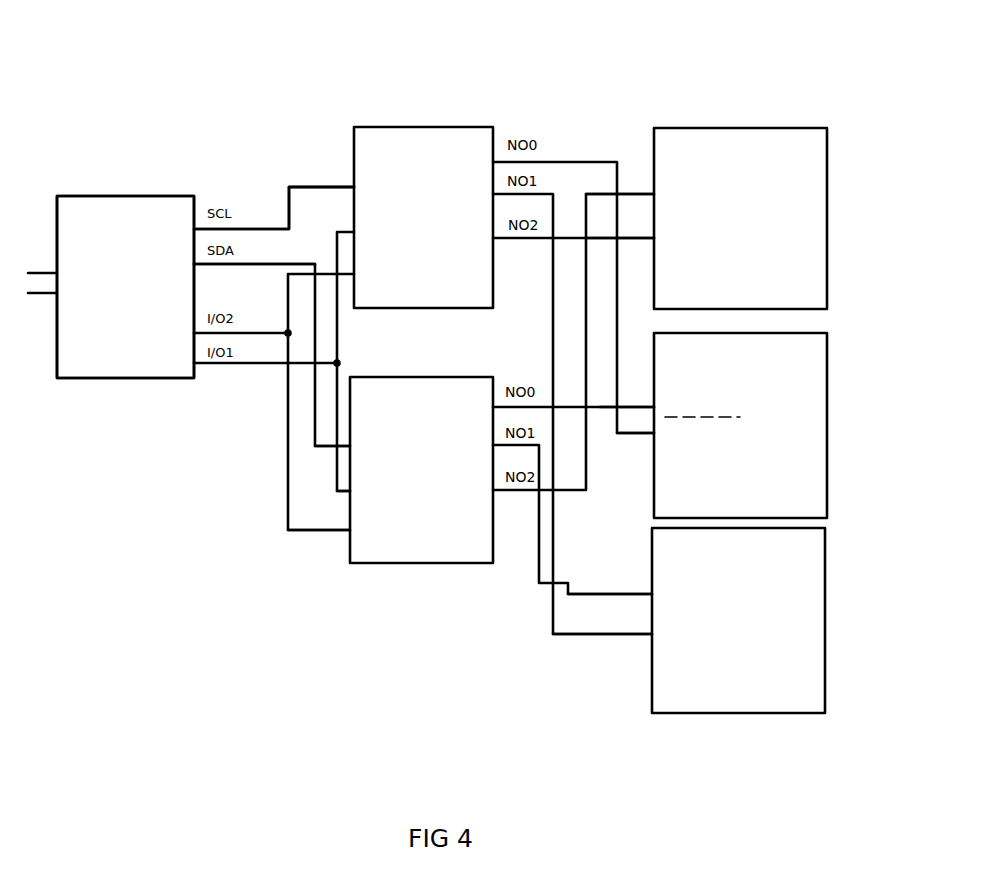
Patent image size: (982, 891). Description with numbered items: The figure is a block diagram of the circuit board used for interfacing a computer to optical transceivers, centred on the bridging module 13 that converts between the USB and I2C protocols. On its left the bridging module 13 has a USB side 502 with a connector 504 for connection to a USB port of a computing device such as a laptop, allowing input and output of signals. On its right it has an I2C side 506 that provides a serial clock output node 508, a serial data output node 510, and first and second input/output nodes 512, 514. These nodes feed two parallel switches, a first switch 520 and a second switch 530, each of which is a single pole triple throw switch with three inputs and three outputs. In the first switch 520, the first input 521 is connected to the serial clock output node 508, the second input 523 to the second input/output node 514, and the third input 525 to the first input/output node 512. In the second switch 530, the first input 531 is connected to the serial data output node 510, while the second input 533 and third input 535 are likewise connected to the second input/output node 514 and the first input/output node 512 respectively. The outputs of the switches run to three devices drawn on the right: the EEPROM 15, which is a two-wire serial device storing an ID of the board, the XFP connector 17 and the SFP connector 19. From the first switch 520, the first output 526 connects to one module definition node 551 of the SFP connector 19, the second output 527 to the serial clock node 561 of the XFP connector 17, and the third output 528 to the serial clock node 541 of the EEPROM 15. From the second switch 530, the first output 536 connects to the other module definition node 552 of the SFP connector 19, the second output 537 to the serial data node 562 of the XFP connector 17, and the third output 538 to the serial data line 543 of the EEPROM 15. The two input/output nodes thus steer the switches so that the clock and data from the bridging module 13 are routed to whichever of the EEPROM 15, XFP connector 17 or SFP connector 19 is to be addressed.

The bridging module 13 is at (120, 373).
The EEPROM 15 is at (720, 143).
The XFP connector 17 is at (692, 700).
The SFP connector 19 is at (781, 428).
The USB side 502 is at (54, 208).
The connector 504 is at (69, 288).
The I2C side 506 is at (198, 212).
The serial clock output node 508 is at (246, 214).
The serial data output node 510 is at (244, 346).
The first input/output node 512 is at (217, 333).
The second input/output node 514 is at (241, 363).
The first switch 520 is at (411, 142).
The first input of first switch 521 is at (344, 179).
The second input of first switch 523 is at (370, 356).
The third input of first switch 525 is at (344, 395).
The first output of first switch 526 is at (550, 290).
The second output of first switch 527 is at (550, 410).
The third output of first switch 528 is at (553, 242).
The second switch 530 is at (410, 548).
The first input of second switch 531 is at (355, 444).
The second input of second switch 533 is at (369, 491).
The third input of second switch 535 is at (343, 529).
The first output of second switch 536 is at (551, 406).
The second output of second switch 537 is at (550, 514).
The third output of second switch 538 is at (552, 347).
The serial clock node of EEPROM 541 is at (642, 242).
The serial data line of EEPROM 543 is at (643, 194).
The module definition node of SFP connector 551 is at (660, 437).
The other module definition node of SFP connector 552 is at (670, 402).
The serial clock node of XFP connector 561 is at (624, 634).
The serial data node of XFP connector 562 is at (632, 594).